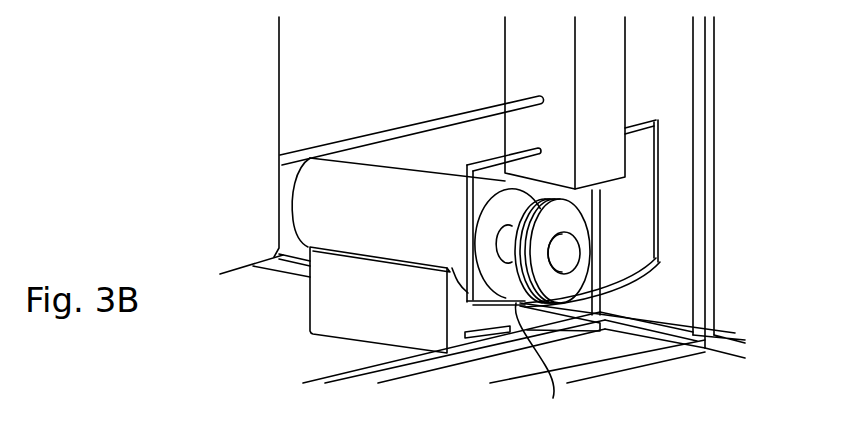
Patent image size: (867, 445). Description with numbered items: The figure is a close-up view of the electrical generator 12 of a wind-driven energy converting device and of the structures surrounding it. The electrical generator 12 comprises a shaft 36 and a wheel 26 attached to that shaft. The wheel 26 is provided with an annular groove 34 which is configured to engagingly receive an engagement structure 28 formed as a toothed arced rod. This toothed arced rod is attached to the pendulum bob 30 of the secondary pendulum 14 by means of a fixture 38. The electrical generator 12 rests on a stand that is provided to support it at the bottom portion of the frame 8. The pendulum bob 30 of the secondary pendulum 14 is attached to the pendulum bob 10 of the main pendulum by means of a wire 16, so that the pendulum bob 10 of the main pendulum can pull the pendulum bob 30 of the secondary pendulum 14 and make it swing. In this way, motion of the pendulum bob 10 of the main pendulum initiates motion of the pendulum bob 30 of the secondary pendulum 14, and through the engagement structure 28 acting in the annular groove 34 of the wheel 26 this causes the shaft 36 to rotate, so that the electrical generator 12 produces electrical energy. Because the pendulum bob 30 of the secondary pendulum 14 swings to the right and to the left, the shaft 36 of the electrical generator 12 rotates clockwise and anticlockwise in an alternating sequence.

The frame 8 is at (716, 166).
The pendulum bob of the main pendulum 10 is at (249, 31).
The electrical generator 12 is at (348, 232).
The secondary pendulum 14 is at (643, 60).
The wire 16 is at (352, 140).
The wheel 26 is at (572, 277).
The engagement structure 28 is at (539, 365).
The pendulum bob of the secondary pendulum 30 is at (530, 63).
The annular groove 34 is at (512, 267).
The shaft 36 is at (503, 238).
The fixture 38 is at (465, 196).